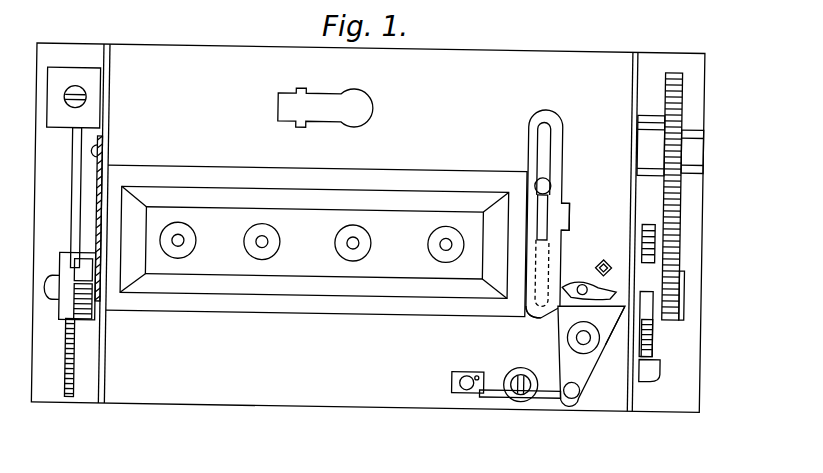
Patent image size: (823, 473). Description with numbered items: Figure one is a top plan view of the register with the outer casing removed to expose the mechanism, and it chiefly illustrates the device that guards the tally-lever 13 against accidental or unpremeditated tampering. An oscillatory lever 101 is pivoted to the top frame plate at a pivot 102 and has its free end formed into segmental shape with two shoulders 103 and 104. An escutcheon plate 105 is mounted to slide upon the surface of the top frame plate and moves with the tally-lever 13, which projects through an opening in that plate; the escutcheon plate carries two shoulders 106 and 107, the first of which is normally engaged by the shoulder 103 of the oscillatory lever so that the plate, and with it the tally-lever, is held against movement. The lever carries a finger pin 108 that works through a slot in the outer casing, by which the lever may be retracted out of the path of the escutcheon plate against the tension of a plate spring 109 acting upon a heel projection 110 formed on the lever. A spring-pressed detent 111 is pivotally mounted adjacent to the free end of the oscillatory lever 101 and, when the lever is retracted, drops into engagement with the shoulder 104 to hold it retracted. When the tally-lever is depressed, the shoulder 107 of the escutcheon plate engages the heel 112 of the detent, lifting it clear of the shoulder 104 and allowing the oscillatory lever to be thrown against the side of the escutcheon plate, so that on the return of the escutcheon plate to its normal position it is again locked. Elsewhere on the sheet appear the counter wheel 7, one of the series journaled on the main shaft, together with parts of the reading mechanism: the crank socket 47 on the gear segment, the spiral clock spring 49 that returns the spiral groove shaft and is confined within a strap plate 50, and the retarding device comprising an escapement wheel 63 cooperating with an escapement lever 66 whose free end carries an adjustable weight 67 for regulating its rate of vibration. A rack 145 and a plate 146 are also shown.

The adjustable weight 67 is at (74, 97).
The escapement lever 66 is at (75, 204).
The escapement wheel 63 is at (75, 352).
The escutcheon plate 105 is at (568, 152).
The tally-lever 13 is at (553, 177).
The shoulder 107 is at (575, 212).
The heel 112 is at (594, 263).
The spring-pressed detent 111 is at (624, 283).
The shoulder 106 is at (552, 308).
The shoulder 103 is at (583, 331).
The oscillatory lever 101 is at (570, 352).
The shoulder 104 is at (621, 340).
The finger pin 108 is at (592, 331).
The plate spring 109 is at (511, 388).
The counter wheel 7 is at (528, 390).
The heel projection 110 is at (566, 392).
The pivot 102 is at (586, 394).
The rack 145 is at (684, 194).
The plate 146 is at (648, 110).
The crank socket 47 is at (702, 168).
The spiral clock spring 49 is at (660, 328).
The strap plate 50 is at (660, 342).